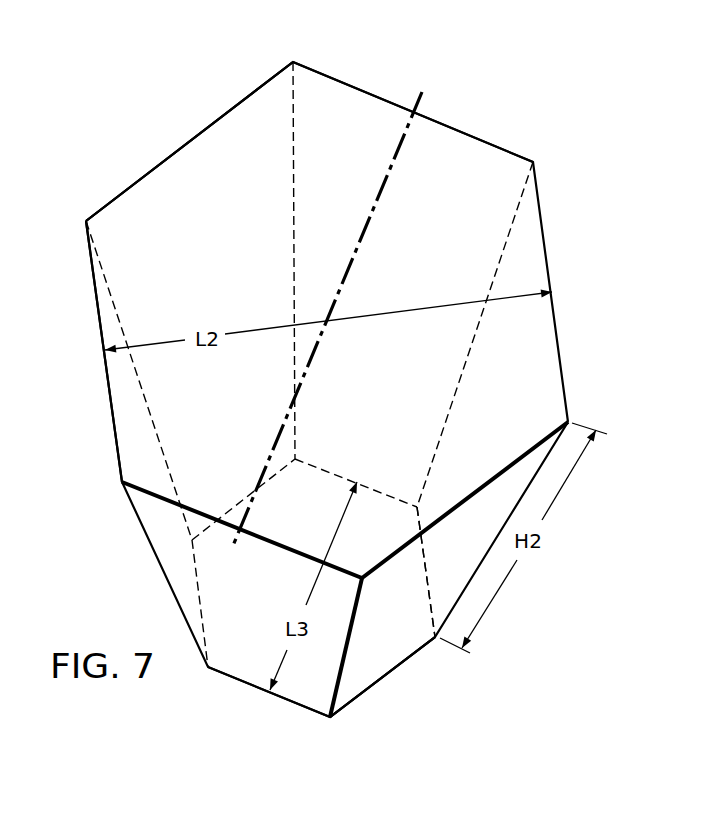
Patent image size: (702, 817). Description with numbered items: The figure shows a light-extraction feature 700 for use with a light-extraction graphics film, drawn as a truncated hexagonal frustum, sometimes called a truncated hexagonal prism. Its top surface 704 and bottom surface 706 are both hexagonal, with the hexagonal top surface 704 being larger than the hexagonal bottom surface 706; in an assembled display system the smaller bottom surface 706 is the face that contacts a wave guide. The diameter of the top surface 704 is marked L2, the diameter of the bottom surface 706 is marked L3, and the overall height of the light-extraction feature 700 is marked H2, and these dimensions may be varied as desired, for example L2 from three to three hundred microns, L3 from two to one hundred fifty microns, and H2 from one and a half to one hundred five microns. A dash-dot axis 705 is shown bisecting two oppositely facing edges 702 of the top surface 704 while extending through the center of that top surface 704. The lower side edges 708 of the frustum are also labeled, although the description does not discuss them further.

The light-extraction feature 700 is at (522, 114).
The oppositely facing edges 702 is at (265, 83).
The top surface 704 is at (156, 182).
The axis 705 is at (393, 158).
The bottom surface 706 is at (385, 699).
The lower side edges 708 is at (423, 575).